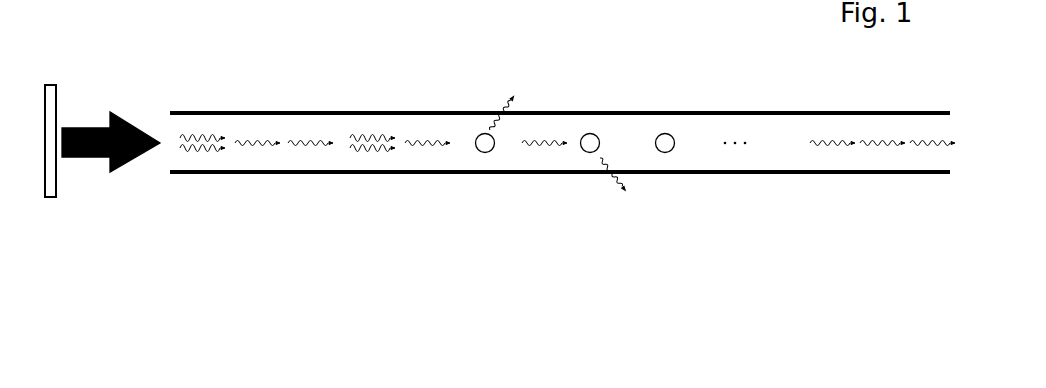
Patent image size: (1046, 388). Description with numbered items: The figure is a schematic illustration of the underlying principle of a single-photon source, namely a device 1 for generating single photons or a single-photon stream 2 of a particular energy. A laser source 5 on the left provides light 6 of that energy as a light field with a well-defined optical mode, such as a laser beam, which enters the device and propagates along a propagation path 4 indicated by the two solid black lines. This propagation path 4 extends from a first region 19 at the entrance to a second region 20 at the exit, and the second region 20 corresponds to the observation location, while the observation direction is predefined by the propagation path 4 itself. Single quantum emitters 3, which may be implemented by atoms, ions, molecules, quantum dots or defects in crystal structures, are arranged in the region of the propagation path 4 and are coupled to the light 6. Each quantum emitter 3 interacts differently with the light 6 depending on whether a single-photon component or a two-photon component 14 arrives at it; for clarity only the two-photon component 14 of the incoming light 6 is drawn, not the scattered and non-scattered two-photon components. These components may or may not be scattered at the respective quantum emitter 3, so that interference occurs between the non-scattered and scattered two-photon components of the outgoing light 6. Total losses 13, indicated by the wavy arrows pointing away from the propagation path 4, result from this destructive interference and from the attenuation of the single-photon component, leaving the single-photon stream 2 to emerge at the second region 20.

The device 1 is at (833, 203).
The single-photon stream 2 is at (862, 137).
The quantum emitters 3 is at (480, 152).
The propagation path 4 is at (241, 173).
The laser source 5 is at (52, 95).
The light 6 is at (110, 170).
The total losses 13 is at (493, 92).
The two-photon component 14 is at (362, 157).
The first region 19 is at (170, 178).
The second region 20 is at (945, 107).